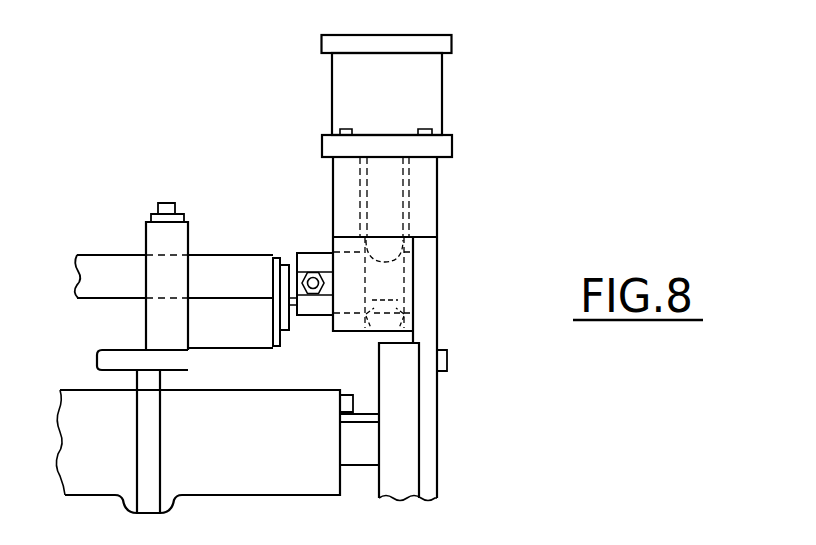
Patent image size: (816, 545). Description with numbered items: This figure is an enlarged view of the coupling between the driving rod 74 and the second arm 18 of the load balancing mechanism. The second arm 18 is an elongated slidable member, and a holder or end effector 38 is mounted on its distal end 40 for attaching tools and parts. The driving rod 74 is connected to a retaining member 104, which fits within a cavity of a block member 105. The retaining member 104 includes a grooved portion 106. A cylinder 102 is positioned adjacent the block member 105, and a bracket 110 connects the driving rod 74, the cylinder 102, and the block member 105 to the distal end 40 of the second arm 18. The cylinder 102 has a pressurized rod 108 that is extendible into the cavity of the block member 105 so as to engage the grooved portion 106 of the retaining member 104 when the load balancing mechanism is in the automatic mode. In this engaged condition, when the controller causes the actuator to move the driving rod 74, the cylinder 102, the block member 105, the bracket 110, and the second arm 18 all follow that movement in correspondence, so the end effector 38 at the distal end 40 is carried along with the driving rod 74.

The second arm 18 is at (361, 471).
The holder or end effector 38 is at (438, 407).
The distal end 40 is at (410, 478).
The driving rod 74 is at (212, 262).
The cylinder 102 is at (433, 88).
The retaining member 104 is at (320, 315).
The block member 105 is at (355, 333).
The grooved portion 106 is at (397, 268).
The pressurized rod 108 is at (397, 200).
The bracket 110 is at (433, 327).